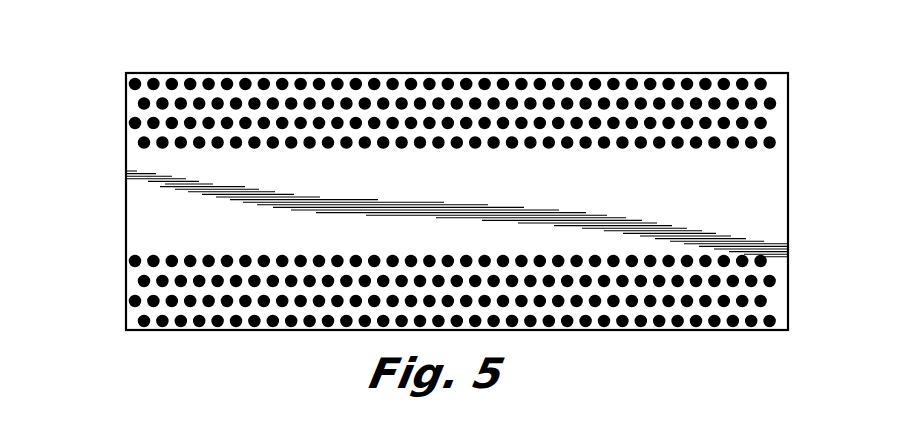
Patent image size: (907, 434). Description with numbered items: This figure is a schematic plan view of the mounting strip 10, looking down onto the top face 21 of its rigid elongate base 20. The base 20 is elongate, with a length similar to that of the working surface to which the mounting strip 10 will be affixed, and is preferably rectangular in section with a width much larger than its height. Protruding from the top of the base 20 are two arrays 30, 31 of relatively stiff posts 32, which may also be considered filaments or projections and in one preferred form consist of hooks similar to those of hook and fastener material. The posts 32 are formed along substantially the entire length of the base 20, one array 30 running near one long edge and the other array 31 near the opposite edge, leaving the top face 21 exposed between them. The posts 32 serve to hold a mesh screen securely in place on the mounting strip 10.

The mounting strip 10 is at (108, 167).
The elongate base 20 is at (502, 225).
The top face 21 is at (468, 192).
The array of posts 30 is at (120, 100).
The array of posts 31 is at (106, 279).
The post 32 is at (776, 104).